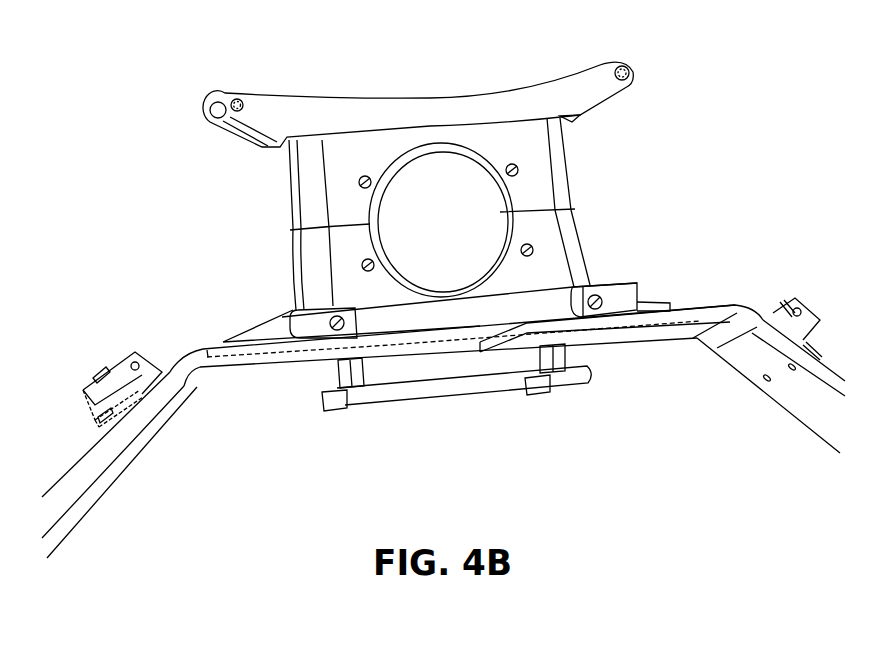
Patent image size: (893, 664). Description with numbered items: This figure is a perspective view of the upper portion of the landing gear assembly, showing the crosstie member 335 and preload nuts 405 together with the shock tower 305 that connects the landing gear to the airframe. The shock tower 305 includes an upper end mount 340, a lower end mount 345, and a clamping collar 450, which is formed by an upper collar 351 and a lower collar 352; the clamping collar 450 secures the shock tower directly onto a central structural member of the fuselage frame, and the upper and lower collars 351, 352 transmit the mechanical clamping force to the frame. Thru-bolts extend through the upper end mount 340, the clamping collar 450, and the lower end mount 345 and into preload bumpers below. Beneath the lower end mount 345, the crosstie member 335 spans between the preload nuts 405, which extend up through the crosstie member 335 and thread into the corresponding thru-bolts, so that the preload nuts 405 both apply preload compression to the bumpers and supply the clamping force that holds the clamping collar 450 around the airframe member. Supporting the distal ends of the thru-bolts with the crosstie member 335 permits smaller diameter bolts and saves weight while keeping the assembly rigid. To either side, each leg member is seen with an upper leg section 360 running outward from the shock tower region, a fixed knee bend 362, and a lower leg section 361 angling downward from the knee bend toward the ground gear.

The shock tower 305 is at (419, 38).
The upper end mount 340 is at (310, 125).
The upper collar 351 is at (535, 151).
The lower collar 352 is at (559, 281).
The clamping collar 450 is at (648, 178).
The lower end mount 345 is at (478, 323).
The upper leg section 360 is at (260, 363).
The fixed knee bend 362 is at (193, 356).
The lower leg section 361 is at (112, 465).
The crosstie member 335 is at (450, 388).
The preload nut 405 is at (343, 407).